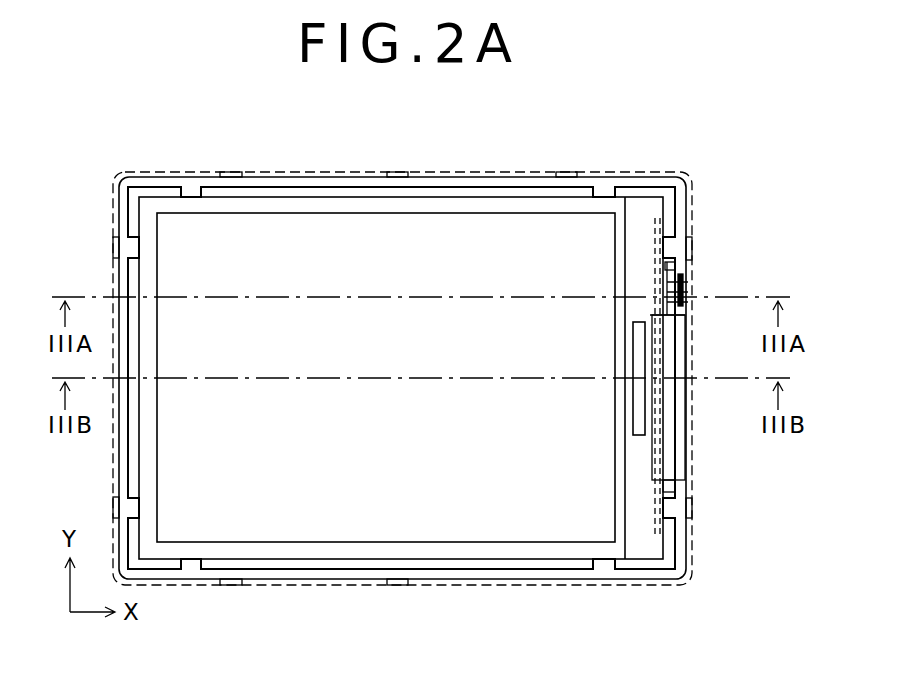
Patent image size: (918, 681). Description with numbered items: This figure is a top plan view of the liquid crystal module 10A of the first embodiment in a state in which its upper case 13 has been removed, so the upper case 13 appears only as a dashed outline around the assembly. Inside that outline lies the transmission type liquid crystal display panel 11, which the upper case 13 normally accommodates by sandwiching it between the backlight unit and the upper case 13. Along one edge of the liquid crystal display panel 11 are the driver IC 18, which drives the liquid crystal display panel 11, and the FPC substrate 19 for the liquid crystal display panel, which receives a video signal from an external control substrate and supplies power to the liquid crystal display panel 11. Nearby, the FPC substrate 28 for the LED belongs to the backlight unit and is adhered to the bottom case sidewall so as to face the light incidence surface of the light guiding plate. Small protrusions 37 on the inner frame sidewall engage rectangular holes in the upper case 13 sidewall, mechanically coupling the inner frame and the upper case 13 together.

The liquid crystal module 10A is at (85, 138).
The liquid crystal display panel 11 is at (493, 207).
The upper case 13 is at (701, 205).
The driver IC 18 is at (642, 407).
The FPC substrate for a liquid crystal display panel 19 is at (663, 465).
The FPC substrate for an LED 28 is at (681, 290).
The protrusion 37 is at (113, 245).